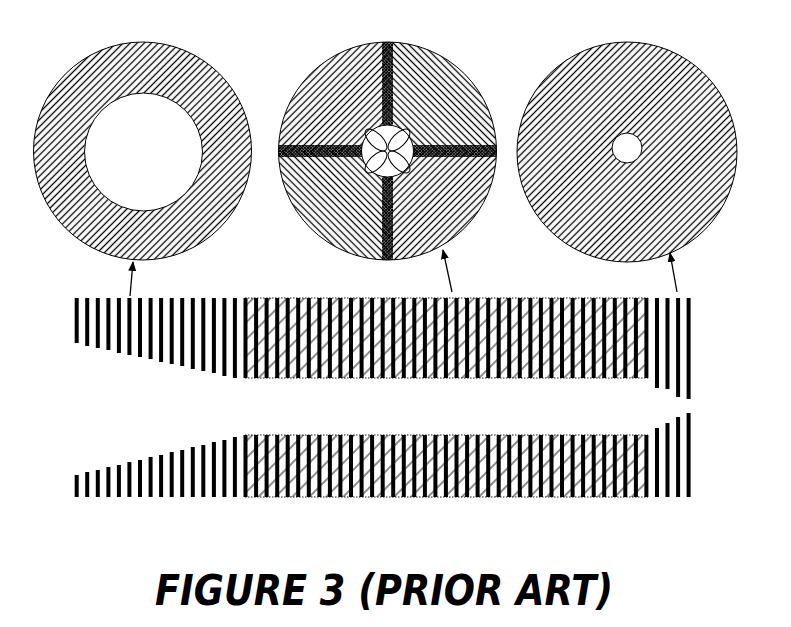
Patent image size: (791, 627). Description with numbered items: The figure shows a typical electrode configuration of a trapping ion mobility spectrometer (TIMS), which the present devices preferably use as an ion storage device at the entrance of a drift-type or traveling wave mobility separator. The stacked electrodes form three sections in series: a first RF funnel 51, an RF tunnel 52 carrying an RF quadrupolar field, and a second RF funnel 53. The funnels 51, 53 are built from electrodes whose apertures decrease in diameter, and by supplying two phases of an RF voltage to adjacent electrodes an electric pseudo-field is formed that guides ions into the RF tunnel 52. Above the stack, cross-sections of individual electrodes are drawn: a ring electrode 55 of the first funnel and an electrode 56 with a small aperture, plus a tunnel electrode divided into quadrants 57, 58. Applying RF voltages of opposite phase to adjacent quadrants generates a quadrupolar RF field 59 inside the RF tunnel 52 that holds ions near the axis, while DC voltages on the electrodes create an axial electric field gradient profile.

The first RF funnel 51 is at (75, 508).
The RF tunnel 52 is at (248, 508).
The second RF funnel 53 is at (692, 508).
The annular spacer ring 55 is at (143, 151).
The disc with central hole 56 is at (627, 152).
The quadrants 57 is at (388, 151).
The quadrants 58 is at (388, 151).
The quadrupolar RF field 59 is at (388, 151).